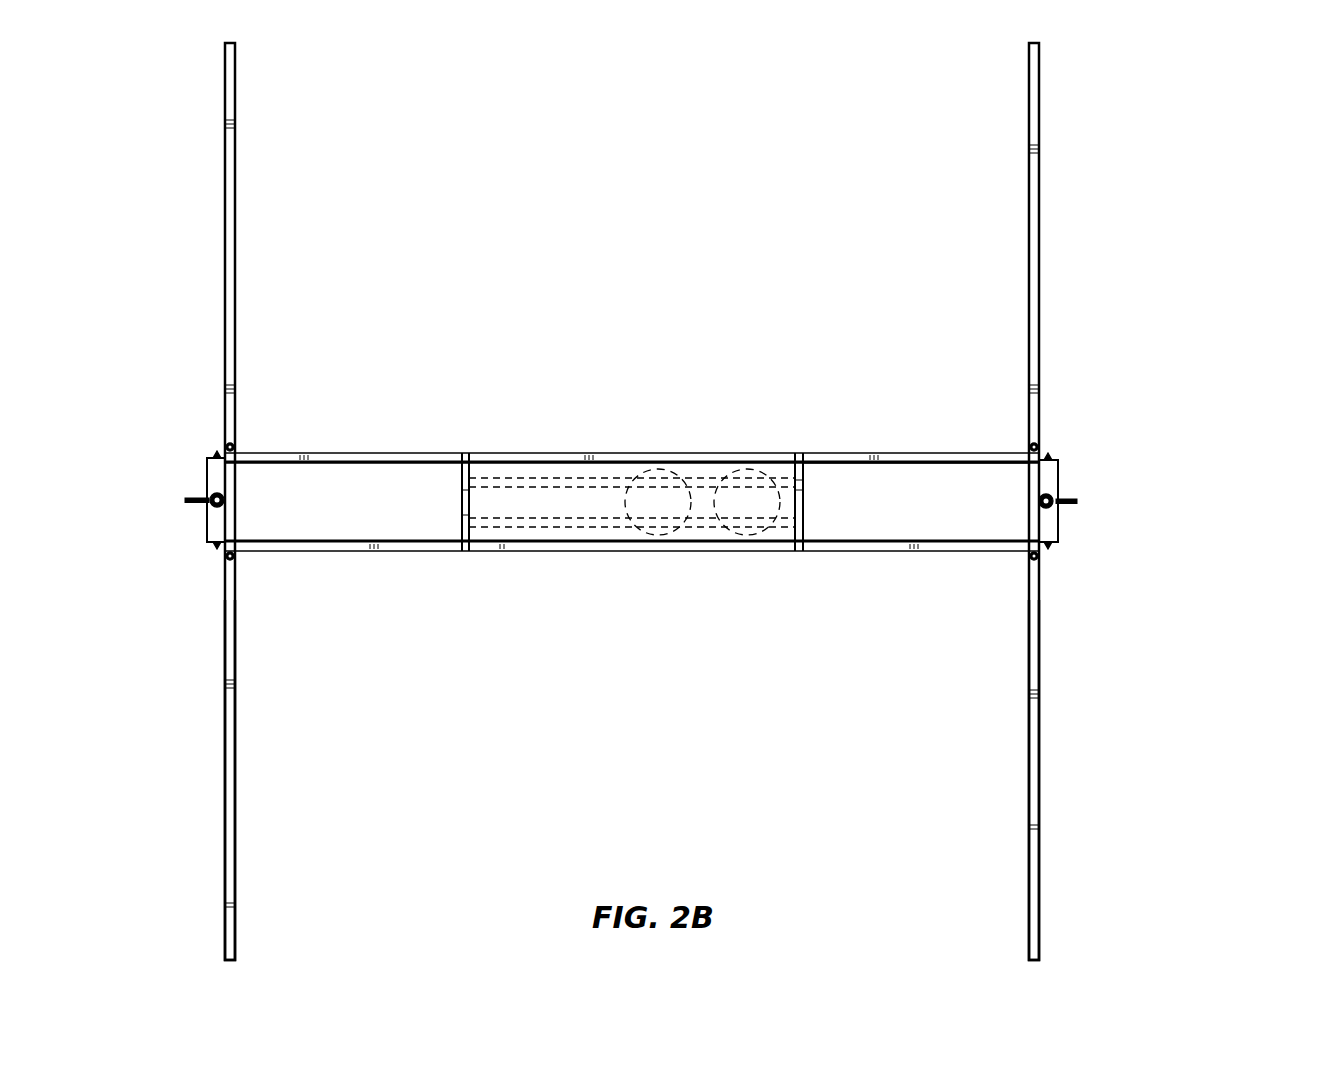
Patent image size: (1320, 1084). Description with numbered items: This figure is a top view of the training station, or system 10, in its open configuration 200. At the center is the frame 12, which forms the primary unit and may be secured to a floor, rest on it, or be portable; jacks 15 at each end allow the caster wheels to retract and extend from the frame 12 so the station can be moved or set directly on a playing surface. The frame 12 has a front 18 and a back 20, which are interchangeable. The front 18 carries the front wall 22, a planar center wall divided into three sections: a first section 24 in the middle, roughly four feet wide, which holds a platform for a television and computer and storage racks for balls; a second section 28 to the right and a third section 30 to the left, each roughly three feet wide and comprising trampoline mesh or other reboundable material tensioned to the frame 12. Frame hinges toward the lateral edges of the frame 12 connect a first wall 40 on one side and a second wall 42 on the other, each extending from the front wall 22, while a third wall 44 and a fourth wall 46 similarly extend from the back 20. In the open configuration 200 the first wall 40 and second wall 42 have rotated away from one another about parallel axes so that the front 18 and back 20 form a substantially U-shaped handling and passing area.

The open configuration 200 is at (858, 135).
The system 10 is at (1120, 342).
The frame 12 is at (1035, 485).
The jacks 15 is at (213, 513).
The front 18 is at (983, 548).
The back 20 is at (972, 452).
The front wall 22 is at (857, 508).
The first section 24 is at (567, 548).
The second section 28 is at (925, 548).
The third section 30 is at (340, 548).
The first wall 40 is at (1039, 765).
The second wall 42 is at (232, 781).
The third wall 44 is at (1042, 218).
The fourth wall 46 is at (232, 205).